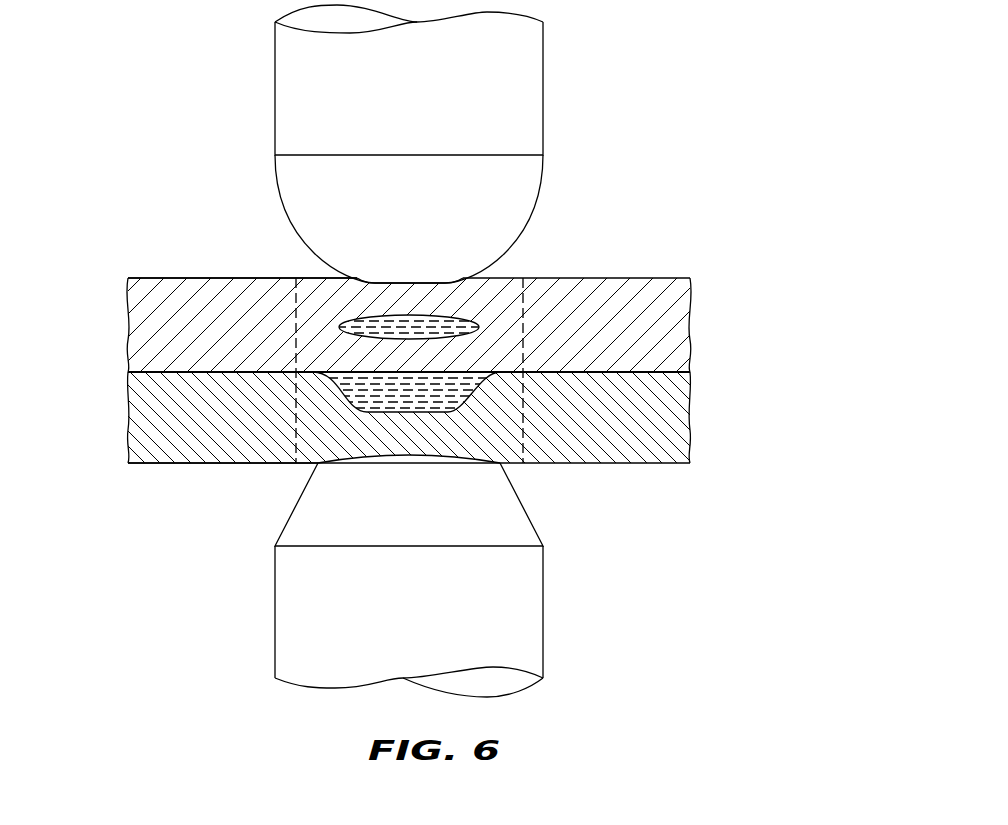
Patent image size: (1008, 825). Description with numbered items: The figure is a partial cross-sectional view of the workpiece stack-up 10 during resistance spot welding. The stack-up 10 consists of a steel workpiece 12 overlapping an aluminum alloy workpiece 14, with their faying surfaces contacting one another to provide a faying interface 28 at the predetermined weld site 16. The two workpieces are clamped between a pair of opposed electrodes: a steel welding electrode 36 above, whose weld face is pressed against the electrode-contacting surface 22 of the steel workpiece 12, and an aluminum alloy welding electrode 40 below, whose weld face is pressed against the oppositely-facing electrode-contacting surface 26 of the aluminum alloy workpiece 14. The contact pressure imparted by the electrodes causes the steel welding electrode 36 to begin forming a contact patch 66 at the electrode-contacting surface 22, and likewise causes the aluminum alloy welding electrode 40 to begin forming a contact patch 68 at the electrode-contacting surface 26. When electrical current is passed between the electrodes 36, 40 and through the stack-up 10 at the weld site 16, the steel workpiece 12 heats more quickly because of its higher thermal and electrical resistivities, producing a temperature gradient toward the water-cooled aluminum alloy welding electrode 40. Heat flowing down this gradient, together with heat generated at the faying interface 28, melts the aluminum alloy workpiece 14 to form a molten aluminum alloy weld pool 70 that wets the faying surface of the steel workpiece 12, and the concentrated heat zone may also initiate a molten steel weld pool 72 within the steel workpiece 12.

The workpiece stack-up 10 is at (393, 341).
The steel workpiece 12 is at (667, 330).
The aluminum alloy workpiece 14 is at (665, 415).
The weld site 16 is at (523, 320).
The electrode-contacting surface 22 is at (205, 278).
The electrode-contacting surface 26 is at (186, 463).
The faying interface 28 is at (178, 372).
The steel welding electrode 36 is at (544, 70).
The aluminum alloy welding electrode 40 is at (545, 593).
The contact patch 66 is at (398, 283).
The contact patch 68 is at (435, 455).
The molten aluminum alloy weld pool 70 is at (377, 397).
The molten steel weld pool 72 is at (481, 326).